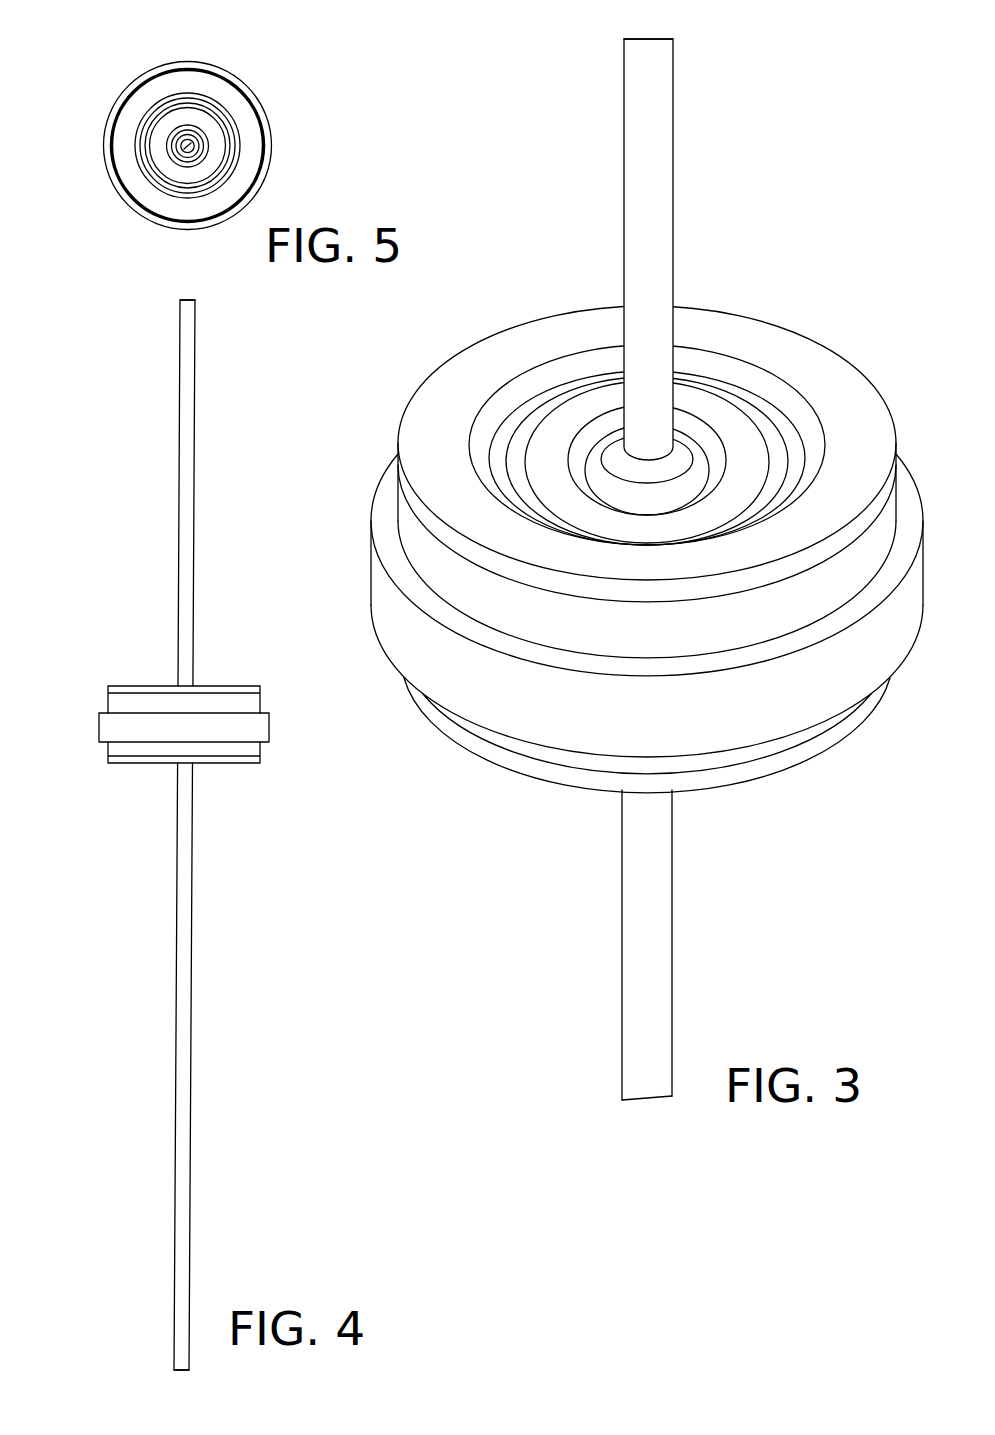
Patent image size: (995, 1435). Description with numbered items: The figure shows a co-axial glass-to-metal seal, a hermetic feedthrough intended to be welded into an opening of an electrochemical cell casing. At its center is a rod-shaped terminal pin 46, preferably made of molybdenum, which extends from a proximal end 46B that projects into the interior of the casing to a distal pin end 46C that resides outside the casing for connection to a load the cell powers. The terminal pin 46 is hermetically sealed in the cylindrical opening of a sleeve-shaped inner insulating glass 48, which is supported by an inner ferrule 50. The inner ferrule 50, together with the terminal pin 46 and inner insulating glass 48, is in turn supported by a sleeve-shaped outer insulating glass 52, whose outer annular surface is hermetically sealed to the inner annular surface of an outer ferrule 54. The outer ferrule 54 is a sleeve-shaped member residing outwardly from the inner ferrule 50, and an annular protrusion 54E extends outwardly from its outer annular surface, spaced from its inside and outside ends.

In FIG. 5, the terminal pin 46 is at (188, 144).
In FIG. 4, the terminal pin 46 is at (188, 907).
In FIG. 3, the terminal pin 46 is at (660, 130).
In FIG. 4, the proximal end 46B is at (182, 1237).
In FIG. 3, the proximal end 46B is at (653, 953).
In FIG. 4, the distal pin end 46C is at (196, 342).
In FIG. 3, the distal pin end 46C is at (652, 48).
In FIG. 5, the inner insulating glass 48 is at (175, 157).
In FIG. 3, the inner insulating glass 48 is at (690, 441).
In FIG. 5, the inner ferrule 50 is at (172, 175).
In FIG. 3, the inner ferrule 50 is at (746, 453).
In FIG. 5, the outer insulating glass 52 is at (233, 155).
In FIG. 3, the outer insulating glass 52 is at (795, 471).
In FIG. 5, the outer ferrule 54 is at (252, 127).
In FIG. 4, the outer ferrule 54 is at (260, 702).
In FIG. 3, the outer ferrule 54 is at (850, 475).
In FIG. 5, the annular protrusion 54E is at (254, 88).
In FIG. 4, the annular protrusion 54E is at (269, 727).
In FIG. 3, the annular protrusion 54E is at (923, 547).